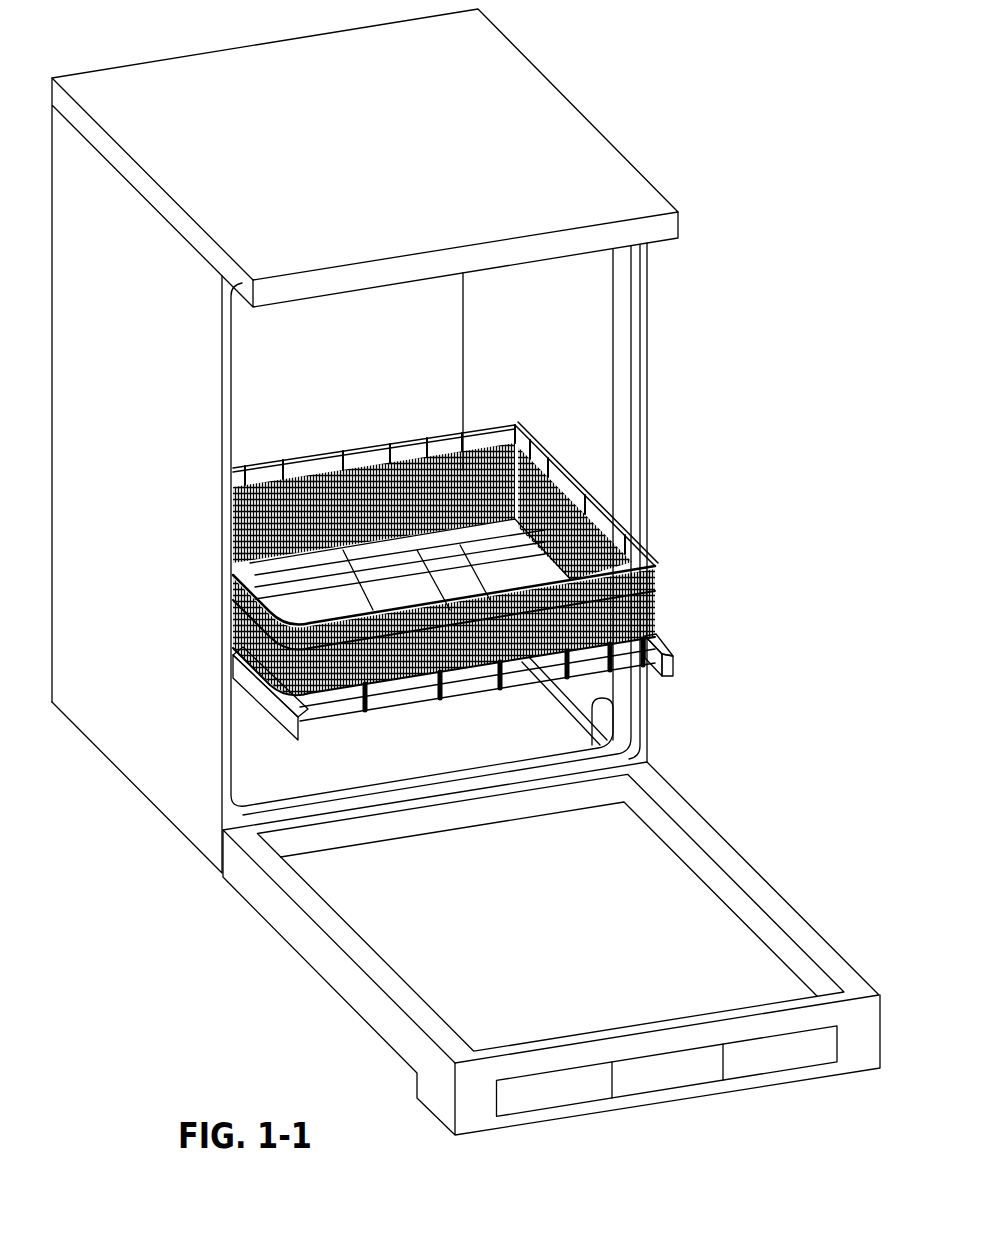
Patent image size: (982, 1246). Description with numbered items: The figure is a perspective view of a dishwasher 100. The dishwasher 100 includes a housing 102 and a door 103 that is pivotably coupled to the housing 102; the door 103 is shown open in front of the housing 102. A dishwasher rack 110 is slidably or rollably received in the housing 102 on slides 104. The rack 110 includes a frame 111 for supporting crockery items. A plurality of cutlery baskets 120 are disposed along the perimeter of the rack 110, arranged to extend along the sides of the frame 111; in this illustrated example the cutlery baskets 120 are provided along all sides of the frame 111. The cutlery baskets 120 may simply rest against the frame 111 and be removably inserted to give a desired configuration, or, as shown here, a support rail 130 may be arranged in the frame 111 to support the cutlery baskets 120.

The dishwasher 100 is at (592, 68).
The housing 102 is at (78, 690).
The door 103 is at (282, 918).
The slides 104 is at (273, 707).
The dishwasher rack 110 is at (338, 430).
The frame 111 is at (254, 463).
The cutlery basket 120 is at (486, 460).
The support rail 130 is at (330, 712).